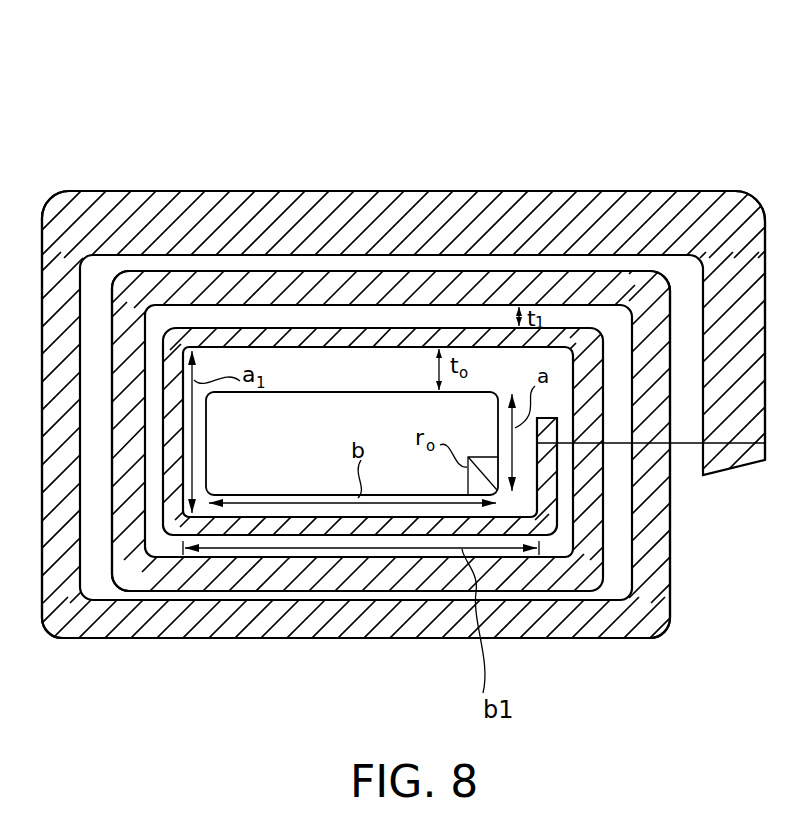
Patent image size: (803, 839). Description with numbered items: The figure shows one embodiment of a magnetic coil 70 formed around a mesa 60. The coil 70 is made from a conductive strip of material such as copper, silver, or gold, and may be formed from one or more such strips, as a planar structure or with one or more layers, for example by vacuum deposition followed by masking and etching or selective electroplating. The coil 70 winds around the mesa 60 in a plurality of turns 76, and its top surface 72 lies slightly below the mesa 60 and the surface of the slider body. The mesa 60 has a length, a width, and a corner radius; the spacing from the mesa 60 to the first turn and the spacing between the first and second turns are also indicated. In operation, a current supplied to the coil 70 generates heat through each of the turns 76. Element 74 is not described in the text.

The magnetic coil 70 is at (73, 118).
The top surface 72 is at (587, 620).
The bottom surface of coil 74 is at (412, 640).
The turns 76 is at (303, 580).
The mesa 60 is at (278, 456).